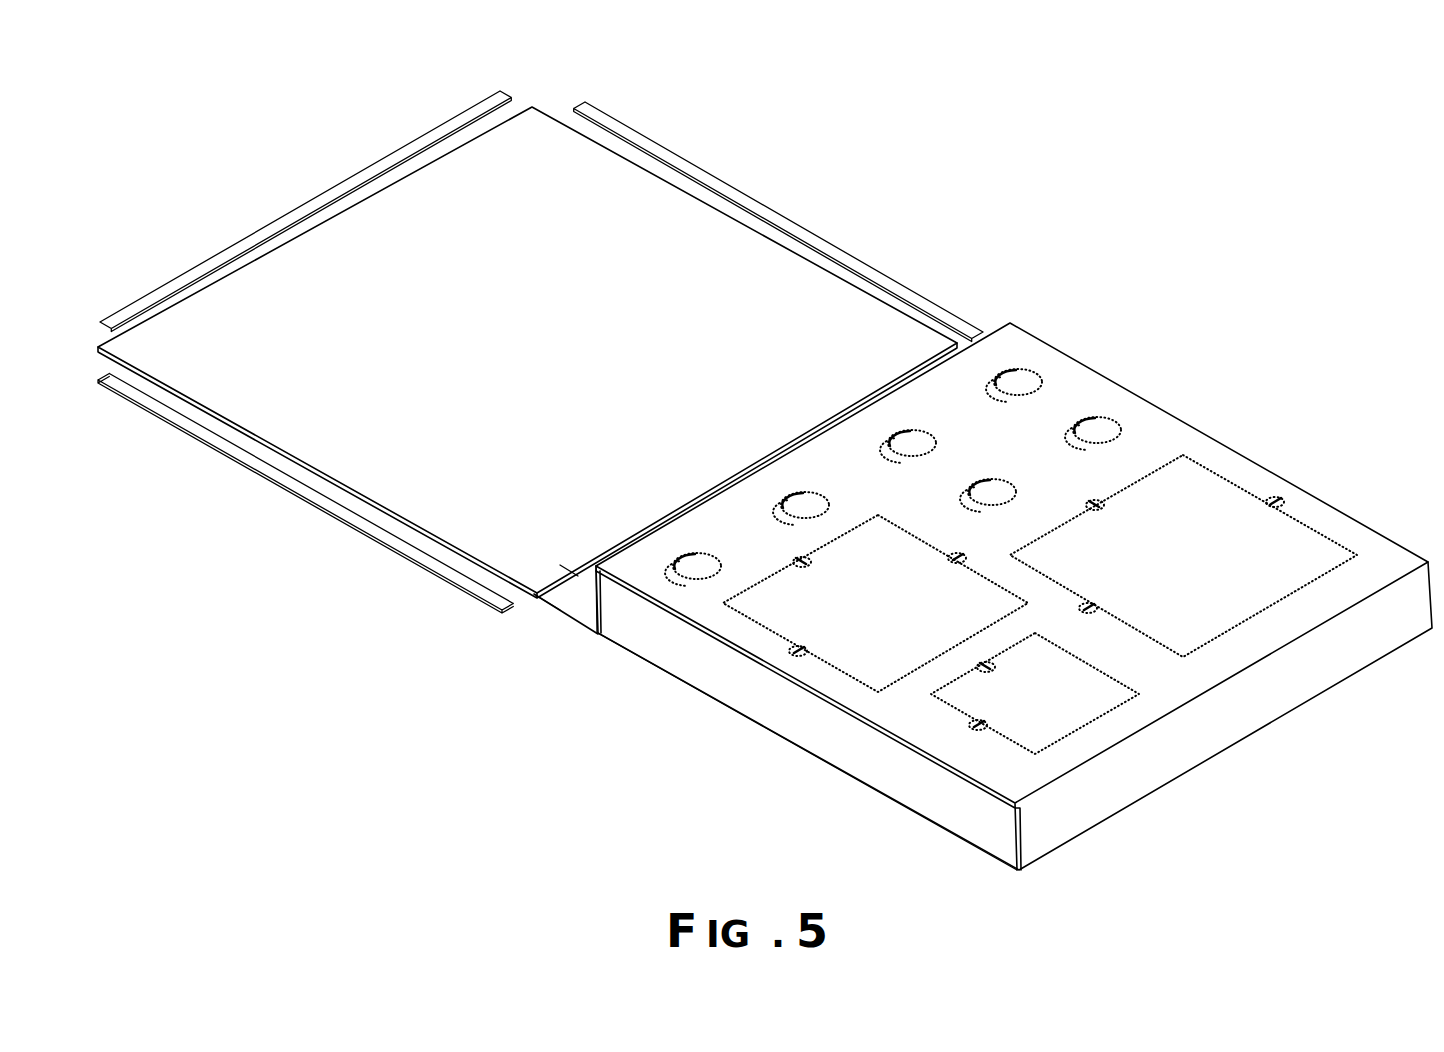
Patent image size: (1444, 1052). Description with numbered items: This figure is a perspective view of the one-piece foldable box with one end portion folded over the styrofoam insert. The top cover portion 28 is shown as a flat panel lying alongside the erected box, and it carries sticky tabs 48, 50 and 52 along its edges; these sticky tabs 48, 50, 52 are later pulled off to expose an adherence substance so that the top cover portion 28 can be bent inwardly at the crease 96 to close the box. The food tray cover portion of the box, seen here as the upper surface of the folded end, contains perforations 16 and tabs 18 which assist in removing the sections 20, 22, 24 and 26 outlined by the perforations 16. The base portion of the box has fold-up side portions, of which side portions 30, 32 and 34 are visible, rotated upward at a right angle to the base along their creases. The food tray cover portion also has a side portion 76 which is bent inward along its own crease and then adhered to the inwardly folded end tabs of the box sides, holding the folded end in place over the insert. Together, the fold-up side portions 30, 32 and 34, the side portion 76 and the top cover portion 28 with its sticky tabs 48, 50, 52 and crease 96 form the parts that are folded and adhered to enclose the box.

The perforations 16 is at (963, 457).
The tabs 18 is at (797, 652).
The section 20 is at (861, 640).
The section 22 is at (1019, 718).
The section 24 is at (1110, 571).
The section 26 is at (700, 576).
The top cover portion 28 is at (372, 360).
The side portion 30 is at (1105, 795).
The side portion 32 is at (822, 740).
The side portion 34 is at (567, 593).
The sticky tab 48 is at (213, 428).
The sticky tab 50 is at (268, 233).
The sticky tab 52 is at (737, 198).
The side portion 76 is at (593, 599).
The crease 96 is at (577, 577).